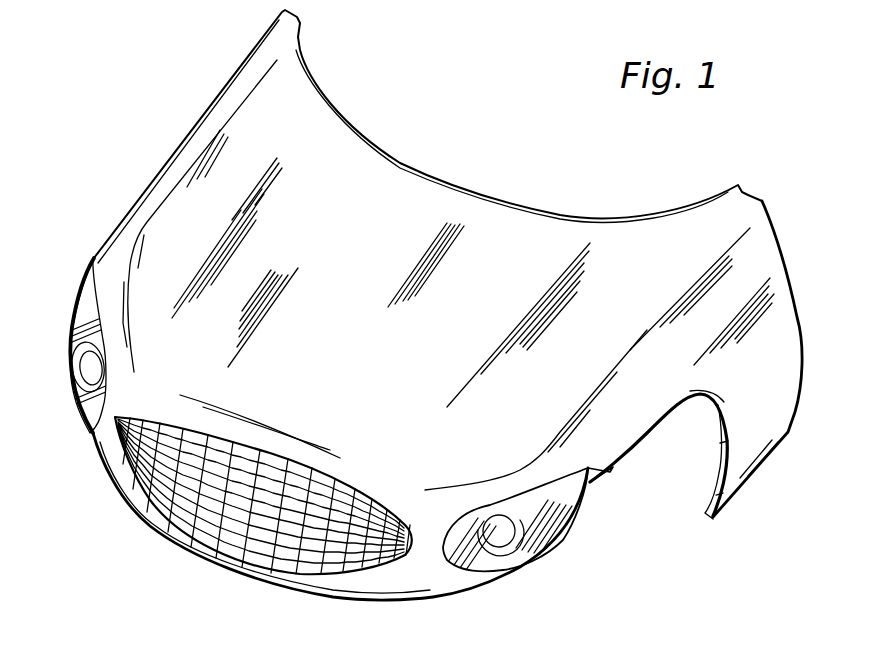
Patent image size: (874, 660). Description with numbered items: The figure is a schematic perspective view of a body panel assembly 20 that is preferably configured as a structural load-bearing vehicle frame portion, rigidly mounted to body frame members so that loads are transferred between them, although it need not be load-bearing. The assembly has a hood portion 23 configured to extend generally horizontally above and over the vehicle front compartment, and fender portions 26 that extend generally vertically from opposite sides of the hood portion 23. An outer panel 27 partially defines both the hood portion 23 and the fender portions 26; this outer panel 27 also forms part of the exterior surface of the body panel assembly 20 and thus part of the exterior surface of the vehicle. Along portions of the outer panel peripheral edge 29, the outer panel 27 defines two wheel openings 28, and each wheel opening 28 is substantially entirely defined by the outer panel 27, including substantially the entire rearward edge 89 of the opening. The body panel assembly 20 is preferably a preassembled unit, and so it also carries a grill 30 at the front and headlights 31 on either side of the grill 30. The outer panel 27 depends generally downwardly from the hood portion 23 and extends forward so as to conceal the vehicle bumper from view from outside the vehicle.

The body panel assembly 20 is at (200, 120).
The hood portion 23 is at (366, 222).
The outer panel 27 is at (463, 265).
The fender portions 26 is at (773, 365).
The wheel opening 28 is at (723, 443).
The rearward edge 89 is at (718, 491).
The outer panel peripheral edge 29 is at (607, 473).
The grill 30 is at (207, 500).
The headlights 31 is at (83, 327).